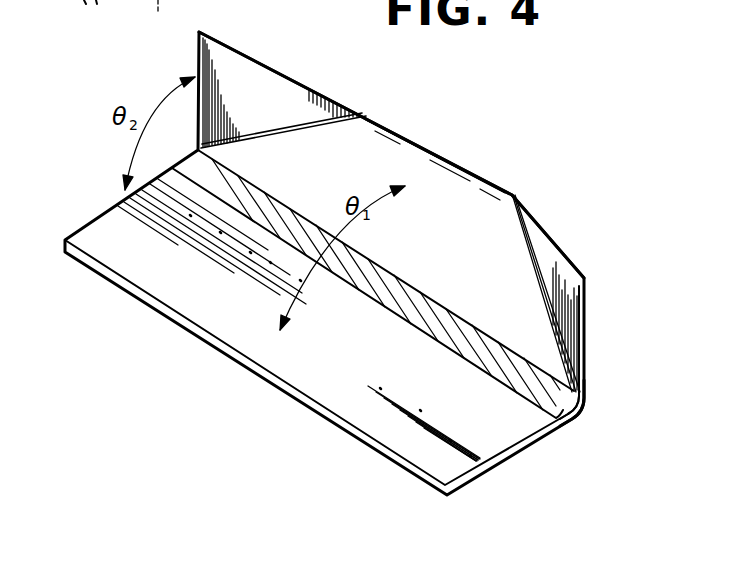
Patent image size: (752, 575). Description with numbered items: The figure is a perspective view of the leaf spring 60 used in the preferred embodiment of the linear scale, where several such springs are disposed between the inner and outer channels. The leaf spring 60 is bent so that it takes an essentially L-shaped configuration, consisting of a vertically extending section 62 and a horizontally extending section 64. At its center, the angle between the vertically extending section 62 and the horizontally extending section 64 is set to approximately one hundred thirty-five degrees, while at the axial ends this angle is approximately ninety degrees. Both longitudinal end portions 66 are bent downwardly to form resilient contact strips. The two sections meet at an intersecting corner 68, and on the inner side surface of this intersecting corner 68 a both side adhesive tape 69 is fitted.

The leaf spring 60 is at (280, 85).
The vertically extending section 62 is at (382, 427).
The horizontally extending section 64 is at (423, 150).
The longitudinal end portion 66 is at (550, 242).
The intersecting corner 68 is at (585, 415).
The both side adhesive tape 69 is at (530, 373).